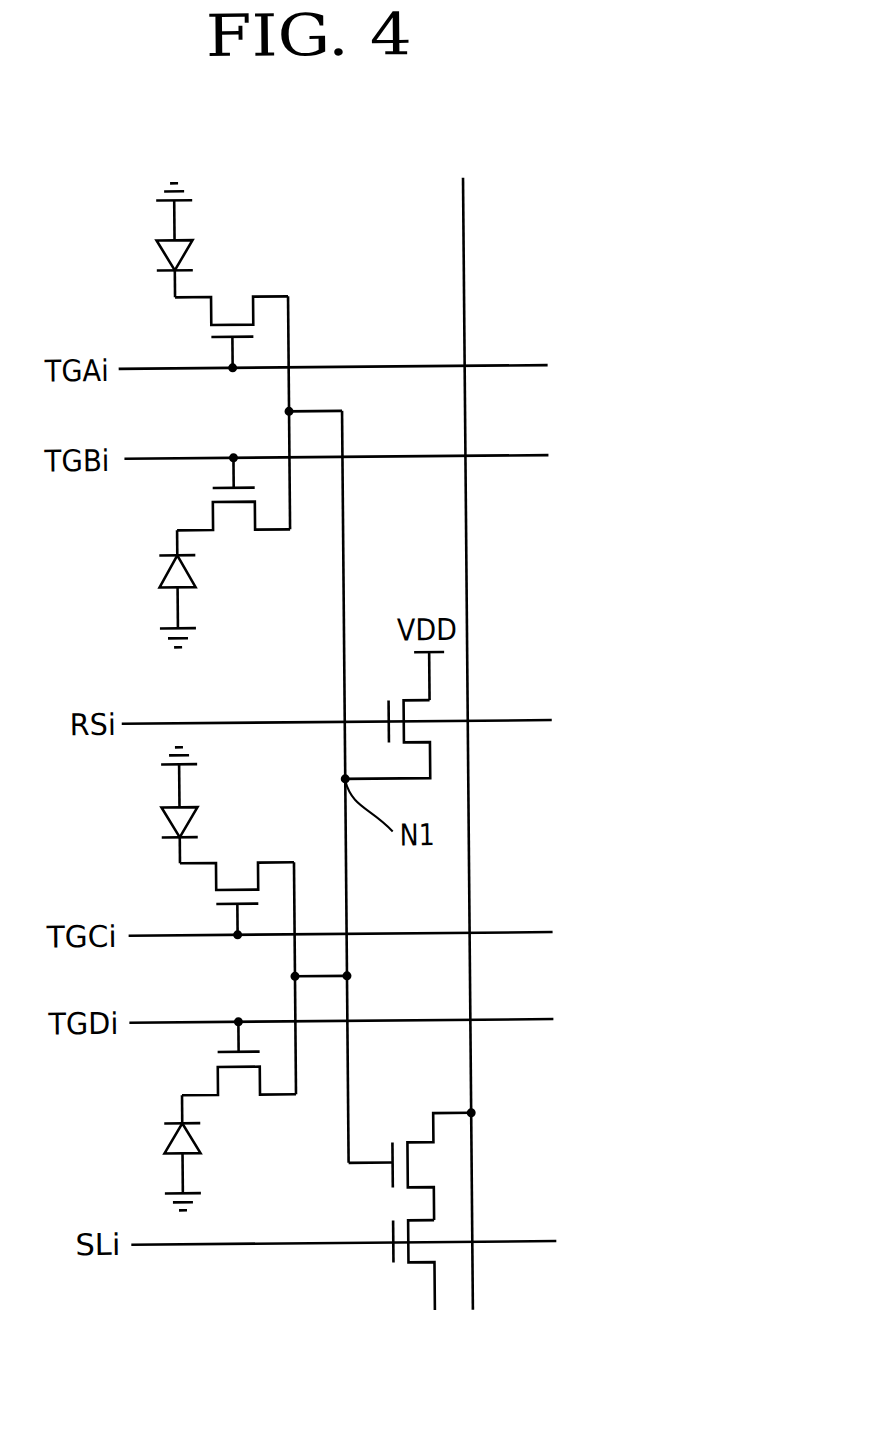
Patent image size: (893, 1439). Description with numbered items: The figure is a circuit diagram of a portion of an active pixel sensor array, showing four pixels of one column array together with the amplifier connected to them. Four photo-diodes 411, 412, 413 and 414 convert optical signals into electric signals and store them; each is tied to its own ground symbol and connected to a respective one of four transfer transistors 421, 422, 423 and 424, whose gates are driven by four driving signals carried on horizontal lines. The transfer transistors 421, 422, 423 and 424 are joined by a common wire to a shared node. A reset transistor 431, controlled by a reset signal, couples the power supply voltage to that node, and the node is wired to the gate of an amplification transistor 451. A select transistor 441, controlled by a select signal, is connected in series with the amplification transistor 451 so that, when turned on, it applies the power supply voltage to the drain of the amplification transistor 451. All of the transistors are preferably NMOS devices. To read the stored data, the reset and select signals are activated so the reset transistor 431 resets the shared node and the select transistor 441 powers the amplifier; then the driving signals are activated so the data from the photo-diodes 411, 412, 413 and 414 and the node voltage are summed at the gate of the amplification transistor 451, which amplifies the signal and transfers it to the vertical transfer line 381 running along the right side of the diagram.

The vertical transfer line 381 is at (469, 813).
The photo-diode 411 is at (168, 254).
The photo-diode 412 is at (168, 571).
The photo-diode 413 is at (168, 821).
The photo-diode 414 is at (168, 1136).
The transfer transistor 421 is at (239, 295).
The transfer transistor 422 is at (235, 527).
The transfer transistor 423 is at (236, 862).
The transfer transistor 424 is at (235, 1094).
The reset transistor 431 is at (430, 710).
The select transistor 441 is at (430, 1232).
The amplification transistor 451 is at (431, 1163).